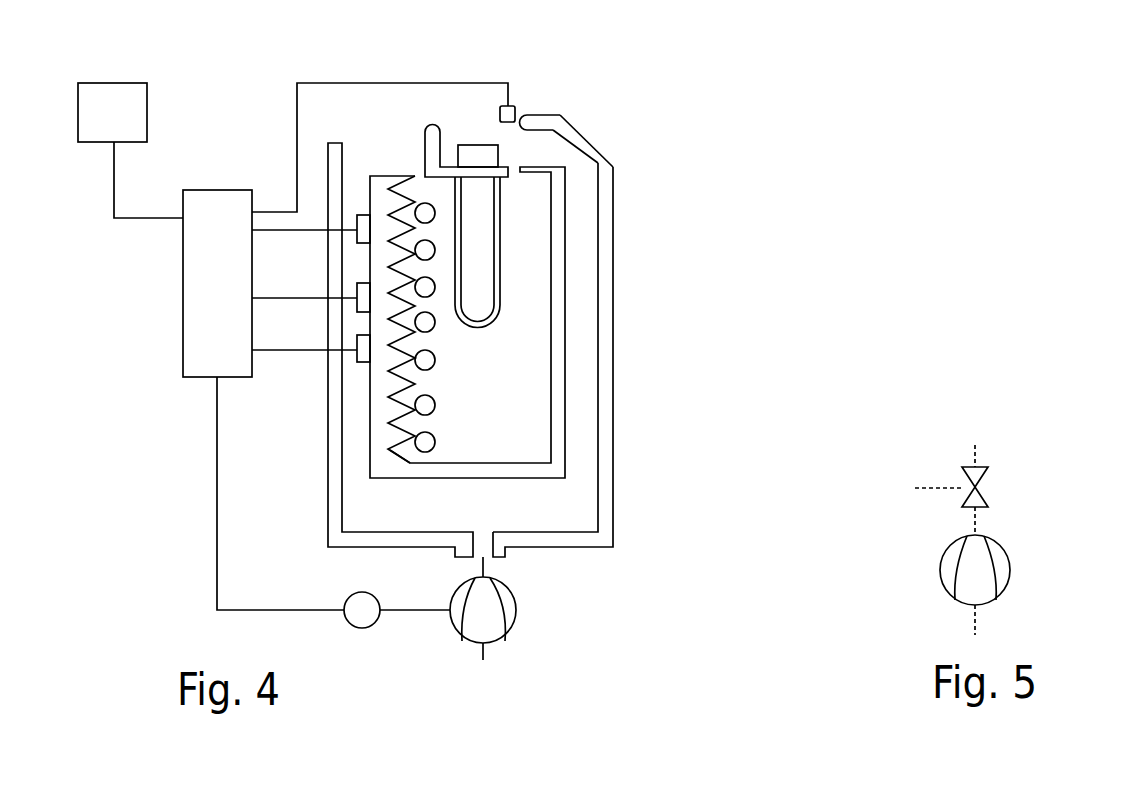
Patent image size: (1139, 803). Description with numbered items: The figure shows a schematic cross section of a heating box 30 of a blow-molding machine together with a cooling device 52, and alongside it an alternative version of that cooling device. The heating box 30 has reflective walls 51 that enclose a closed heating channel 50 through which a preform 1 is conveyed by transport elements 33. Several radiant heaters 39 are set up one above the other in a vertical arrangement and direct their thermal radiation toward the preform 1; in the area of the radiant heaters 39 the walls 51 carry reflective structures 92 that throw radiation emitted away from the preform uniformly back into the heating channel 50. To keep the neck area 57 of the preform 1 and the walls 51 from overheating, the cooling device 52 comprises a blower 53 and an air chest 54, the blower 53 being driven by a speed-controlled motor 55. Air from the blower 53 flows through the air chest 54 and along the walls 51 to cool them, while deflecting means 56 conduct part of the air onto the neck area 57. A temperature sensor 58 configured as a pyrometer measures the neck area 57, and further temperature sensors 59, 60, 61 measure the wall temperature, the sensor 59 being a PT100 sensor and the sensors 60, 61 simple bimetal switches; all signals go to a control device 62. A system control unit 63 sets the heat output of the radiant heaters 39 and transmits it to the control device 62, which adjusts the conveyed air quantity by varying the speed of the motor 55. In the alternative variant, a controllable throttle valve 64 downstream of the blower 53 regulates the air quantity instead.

In FIG. 4, the preform 1 is at (500, 232).
In FIG. 4, the heating box 30 is at (730, 195).
In FIG. 4, the transport elements 33 is at (421, 136).
In FIG. 4, the radiant heaters 39 is at (428, 407).
In FIG. 4, the heating channel 50 is at (528, 203).
In FIG. 4, the reflective walls 51 is at (553, 297).
In FIG. 4, the cooling device 52 is at (585, 611).
In FIG. 5, the cooling device 52 is at (1030, 520).
In FIG. 4, the blower 53 is at (513, 622).
In FIG. 5, the blower 53 is at (1010, 571).
In FIG. 4, the air chest 54 is at (612, 417).
In FIG. 4, the speed-controlled motor 55 is at (372, 629).
In FIG. 4, the deflecting means 56 is at (558, 114).
In FIG. 4, the neck area 57 is at (478, 145).
In FIG. 4, the temperature sensor 58 is at (512, 106).
In FIG. 4, the temperature sensor 59 is at (355, 240).
In FIG. 4, the temperature sensor 60 is at (355, 303).
In FIG. 4, the temperature sensor 61 is at (355, 357).
In FIG. 4, the control device 62 is at (215, 190).
In FIG. 4, the system control unit 63 is at (137, 83).
In FIG. 5, the controllable throttle valve 64 is at (987, 468).
In FIG. 4, the reflective structures 92 is at (410, 382).